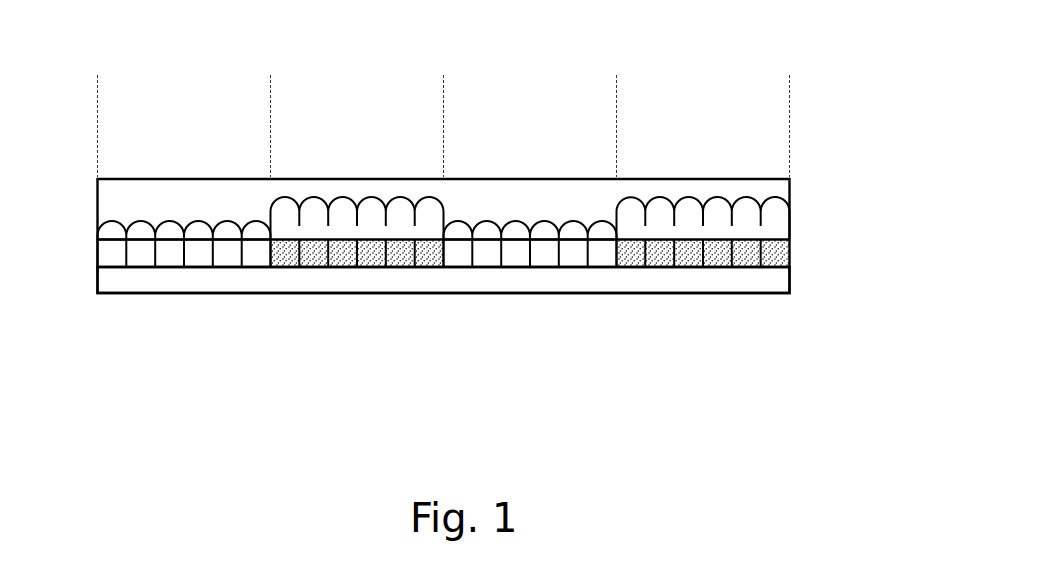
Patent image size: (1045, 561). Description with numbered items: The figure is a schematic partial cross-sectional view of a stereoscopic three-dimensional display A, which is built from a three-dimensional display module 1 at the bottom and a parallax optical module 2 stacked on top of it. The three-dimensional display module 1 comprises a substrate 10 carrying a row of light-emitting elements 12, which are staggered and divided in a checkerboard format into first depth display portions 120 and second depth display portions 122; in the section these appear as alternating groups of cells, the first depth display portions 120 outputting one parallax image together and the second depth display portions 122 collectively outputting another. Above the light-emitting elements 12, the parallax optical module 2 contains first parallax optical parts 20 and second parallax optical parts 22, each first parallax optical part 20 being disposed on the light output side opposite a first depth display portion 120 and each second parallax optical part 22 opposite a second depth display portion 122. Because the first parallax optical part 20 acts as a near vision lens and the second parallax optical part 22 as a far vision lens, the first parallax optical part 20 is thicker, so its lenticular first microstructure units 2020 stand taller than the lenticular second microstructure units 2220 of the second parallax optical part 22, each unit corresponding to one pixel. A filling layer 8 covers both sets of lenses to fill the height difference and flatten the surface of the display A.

The three-dimensional display A is at (897, 182).
The three-dimensional display module 1 is at (805, 268).
The parallax optical module 2 is at (812, 220).
The filling layer 8 is at (103, 192).
The substrate 10 is at (103, 277).
The light-emitting elements 12 is at (105, 256).
The first parallax optical part 20 is at (270, 73).
The second parallax optical part 22 is at (98, 73).
The first depth display portions 120 is at (98, 298).
The second depth display portions 122 is at (270, 298).
The first microstructure units 2020 is at (121, 230).
The second microstructure units 2220 is at (773, 207).